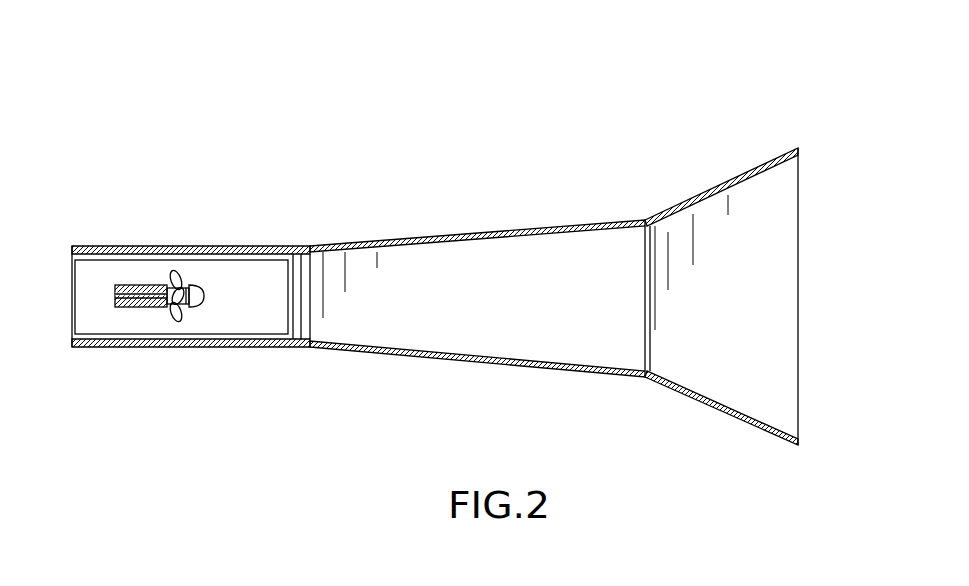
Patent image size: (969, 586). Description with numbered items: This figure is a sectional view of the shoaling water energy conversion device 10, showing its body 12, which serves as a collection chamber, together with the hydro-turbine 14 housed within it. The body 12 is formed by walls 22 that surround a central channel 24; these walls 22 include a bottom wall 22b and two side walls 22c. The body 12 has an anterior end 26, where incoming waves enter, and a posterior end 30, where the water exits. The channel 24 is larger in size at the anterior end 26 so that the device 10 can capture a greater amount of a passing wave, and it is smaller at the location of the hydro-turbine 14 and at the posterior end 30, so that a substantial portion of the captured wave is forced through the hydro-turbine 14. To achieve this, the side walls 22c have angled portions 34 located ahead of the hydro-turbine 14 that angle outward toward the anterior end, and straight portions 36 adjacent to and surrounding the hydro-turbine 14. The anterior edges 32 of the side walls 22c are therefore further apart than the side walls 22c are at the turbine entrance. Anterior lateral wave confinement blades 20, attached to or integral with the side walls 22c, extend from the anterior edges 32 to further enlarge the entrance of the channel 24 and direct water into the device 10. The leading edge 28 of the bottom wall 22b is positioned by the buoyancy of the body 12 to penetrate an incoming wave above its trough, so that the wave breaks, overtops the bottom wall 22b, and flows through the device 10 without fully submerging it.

The shoaling water energy conversion device 10 is at (492, 152).
The body 12 is at (365, 350).
The hydro-turbine 14 is at (137, 320).
The anterior lateral wave confinement blades 20 is at (720, 183).
The walls 22 is at (333, 248).
The bottom wall 22b is at (758, 291).
The side walls 22c is at (428, 236).
The central channel 24 is at (738, 250).
The anterior end 26 is at (757, 430).
The leading edge 28 is at (800, 358).
The posterior end 30 is at (88, 345).
The anterior edges 32 is at (643, 220).
The angled portions 34 is at (503, 230).
The straight portions 36 is at (197, 247).